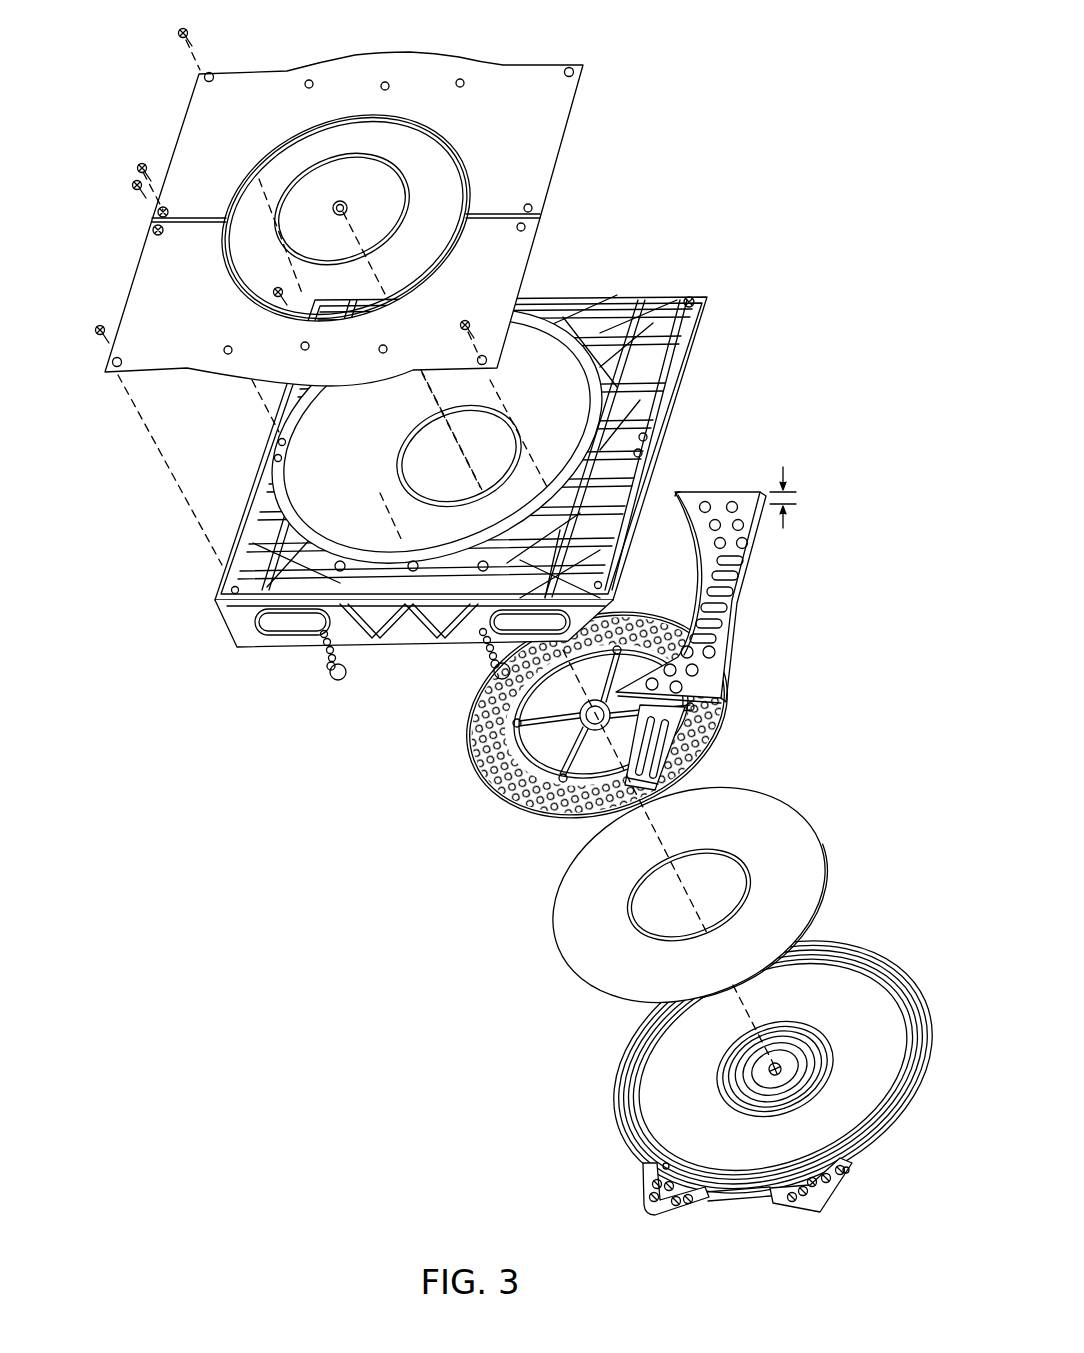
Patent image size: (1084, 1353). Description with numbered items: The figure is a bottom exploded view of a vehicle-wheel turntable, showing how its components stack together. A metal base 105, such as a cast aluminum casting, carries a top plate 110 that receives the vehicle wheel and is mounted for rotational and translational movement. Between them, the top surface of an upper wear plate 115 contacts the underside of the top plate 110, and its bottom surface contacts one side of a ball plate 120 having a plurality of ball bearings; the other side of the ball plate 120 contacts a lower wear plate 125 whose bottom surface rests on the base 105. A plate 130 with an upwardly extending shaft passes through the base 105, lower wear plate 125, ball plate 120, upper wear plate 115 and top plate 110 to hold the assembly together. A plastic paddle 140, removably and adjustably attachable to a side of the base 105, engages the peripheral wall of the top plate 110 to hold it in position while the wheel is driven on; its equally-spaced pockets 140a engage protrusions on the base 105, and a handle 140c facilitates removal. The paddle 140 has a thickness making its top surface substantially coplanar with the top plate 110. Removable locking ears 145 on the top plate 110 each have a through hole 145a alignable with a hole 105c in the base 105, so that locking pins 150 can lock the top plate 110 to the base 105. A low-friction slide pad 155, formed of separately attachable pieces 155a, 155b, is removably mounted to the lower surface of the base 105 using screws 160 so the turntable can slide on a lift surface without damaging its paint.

The base 105 is at (461, 465).
The hole in base 105c is at (480, 572).
The top plate 110 is at (773, 1072).
The upper wear plate 115 is at (804, 822).
The ball plate 120 is at (721, 726).
The lower wear plate 125 is at (518, 407).
The plate 130 is at (355, 198).
The paddle 140 is at (710, 616).
The second engaging members 140a is at (741, 598).
The handle 140c is at (669, 755).
The locking ear 145 is at (734, 1203).
The through hole 145a is at (660, 1214).
The locking pin 150 is at (329, 678).
The slide pad 155 is at (341, 206).
The slide pad piece 155a is at (220, 122).
The slide pad piece 155b is at (151, 332).
The screws 160 is at (190, 31).